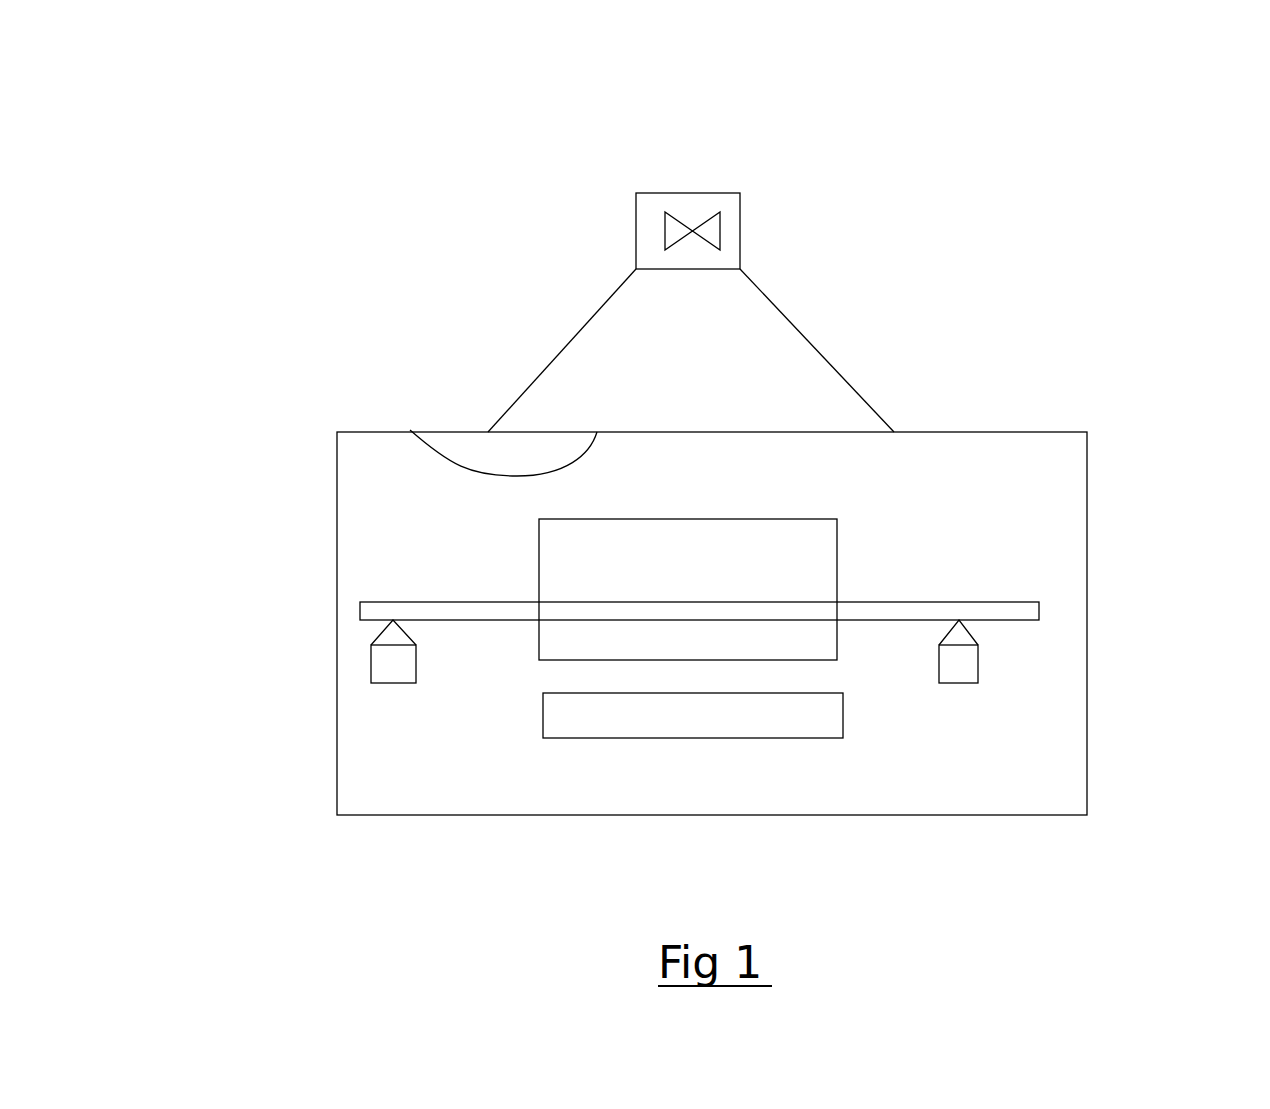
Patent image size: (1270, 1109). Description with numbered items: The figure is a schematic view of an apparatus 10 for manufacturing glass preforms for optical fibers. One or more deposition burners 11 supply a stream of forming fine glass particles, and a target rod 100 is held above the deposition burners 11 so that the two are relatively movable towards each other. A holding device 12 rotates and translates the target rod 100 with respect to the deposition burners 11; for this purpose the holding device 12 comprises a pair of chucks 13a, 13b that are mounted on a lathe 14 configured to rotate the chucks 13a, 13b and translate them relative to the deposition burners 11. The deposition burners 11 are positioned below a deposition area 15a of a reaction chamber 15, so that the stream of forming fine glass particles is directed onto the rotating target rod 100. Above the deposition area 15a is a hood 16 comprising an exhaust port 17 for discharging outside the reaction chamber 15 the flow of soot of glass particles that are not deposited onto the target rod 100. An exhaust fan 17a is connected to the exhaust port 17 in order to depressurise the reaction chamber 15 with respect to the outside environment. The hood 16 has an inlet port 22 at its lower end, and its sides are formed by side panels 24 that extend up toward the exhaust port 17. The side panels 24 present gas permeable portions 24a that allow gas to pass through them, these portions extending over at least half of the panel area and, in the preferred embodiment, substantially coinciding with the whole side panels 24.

The apparatus 10 is at (1105, 233).
The deposition burner 11 is at (562, 715).
The holding device 12 is at (947, 697).
The chuck 13a is at (966, 642).
The chuck 13b is at (393, 639).
The lathe 14 is at (388, 673).
The reaction chamber 15 is at (1065, 458).
The deposition area 15a is at (825, 533).
The hood 16 is at (547, 383).
The exhaust port 17 is at (730, 200).
The exhaust fan 17a is at (715, 233).
The inlet port 22 is at (410, 430).
The side panel 24 is at (577, 330).
The gas permeable portion 24a is at (607, 297).
The target rod 100 is at (1020, 610).